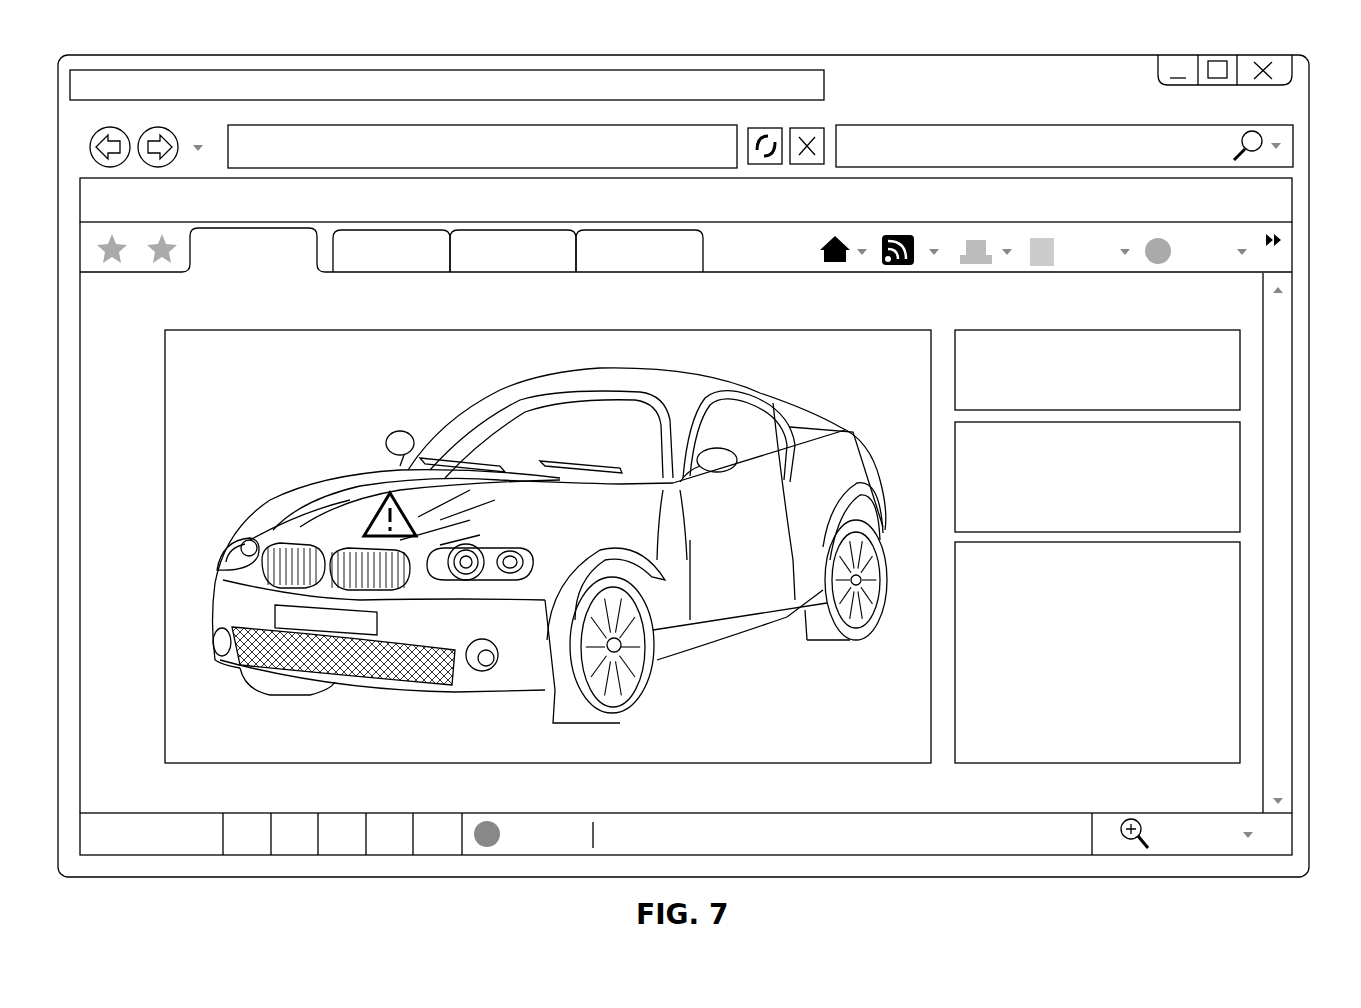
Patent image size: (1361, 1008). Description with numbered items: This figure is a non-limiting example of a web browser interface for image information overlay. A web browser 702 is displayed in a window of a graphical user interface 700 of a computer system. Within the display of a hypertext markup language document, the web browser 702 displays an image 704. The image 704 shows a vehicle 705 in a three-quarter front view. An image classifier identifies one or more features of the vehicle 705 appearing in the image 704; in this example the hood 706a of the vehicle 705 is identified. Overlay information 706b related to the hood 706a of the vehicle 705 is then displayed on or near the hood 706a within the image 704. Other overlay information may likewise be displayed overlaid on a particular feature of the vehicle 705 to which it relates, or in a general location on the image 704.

The graphical user interface 700 is at (1207, 42).
The web browser 702 is at (1310, 318).
The image 704 is at (165, 455).
The vehicle 705 is at (250, 508).
The hood 706a is at (312, 495).
The overlay information 706b is at (368, 524).